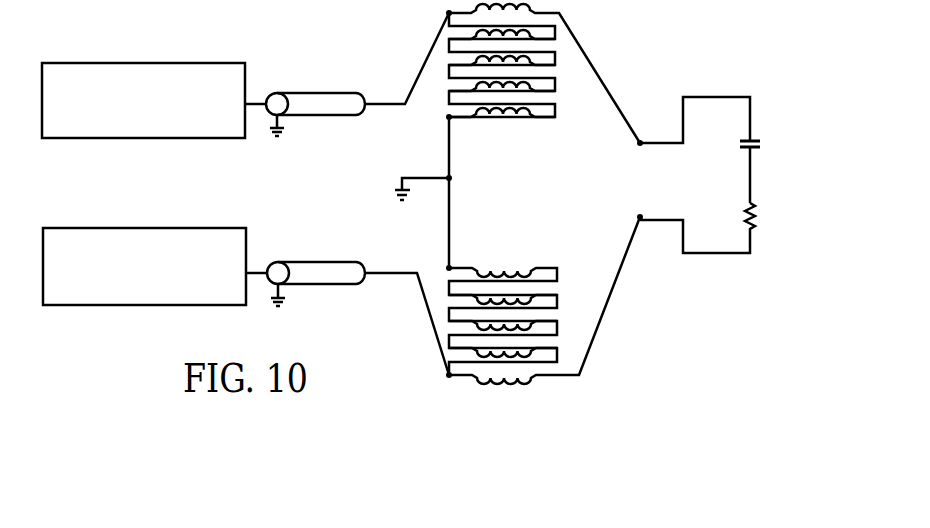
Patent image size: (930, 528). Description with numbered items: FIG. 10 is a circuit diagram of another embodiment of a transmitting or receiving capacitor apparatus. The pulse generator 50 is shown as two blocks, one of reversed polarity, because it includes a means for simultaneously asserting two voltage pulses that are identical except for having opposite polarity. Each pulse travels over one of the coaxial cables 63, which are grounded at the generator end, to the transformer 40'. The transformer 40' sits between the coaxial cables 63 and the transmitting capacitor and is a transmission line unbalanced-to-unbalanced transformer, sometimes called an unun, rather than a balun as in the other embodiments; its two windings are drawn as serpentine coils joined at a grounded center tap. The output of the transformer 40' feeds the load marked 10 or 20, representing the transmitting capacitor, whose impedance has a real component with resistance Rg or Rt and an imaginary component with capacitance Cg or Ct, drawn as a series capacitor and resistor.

The pulse generator 50 is at (144, 184).
The coaxial cables 63 is at (305, 187).
The transformer 40' is at (533, 194).
The capacitor Cg or Ct 10 is at (797, 70).
The resistor Rg or Rt 20 is at (808, 281).